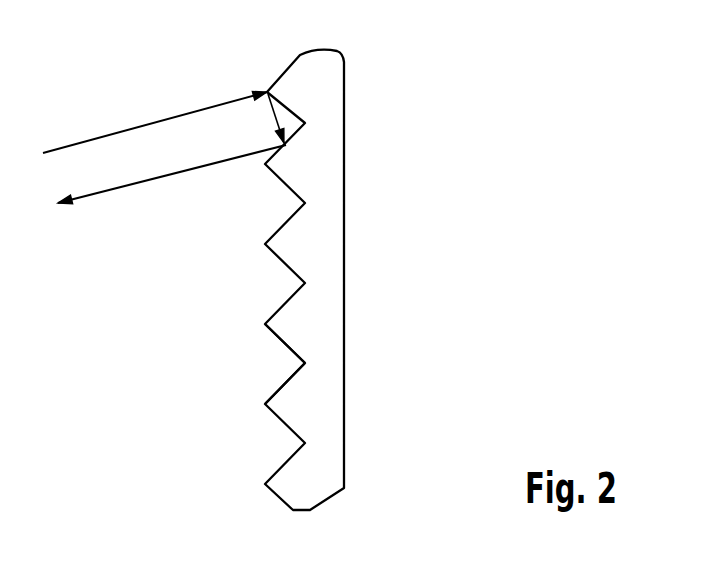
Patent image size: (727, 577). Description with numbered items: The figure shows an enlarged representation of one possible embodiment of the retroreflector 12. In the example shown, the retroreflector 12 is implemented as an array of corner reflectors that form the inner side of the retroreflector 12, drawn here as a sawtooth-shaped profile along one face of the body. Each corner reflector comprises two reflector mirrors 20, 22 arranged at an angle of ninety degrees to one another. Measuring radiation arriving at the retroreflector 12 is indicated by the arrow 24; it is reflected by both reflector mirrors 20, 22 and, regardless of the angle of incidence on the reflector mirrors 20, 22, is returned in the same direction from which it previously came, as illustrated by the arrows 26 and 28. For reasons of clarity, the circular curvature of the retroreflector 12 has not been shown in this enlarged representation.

The retroreflector 12 is at (323, 317).
The reflector mirror 20 is at (283, 346).
The reflector mirror 22 is at (275, 392).
The arrow 24 is at (128, 131).
The arrow 26 is at (281, 112).
The arrow 28 is at (142, 183).